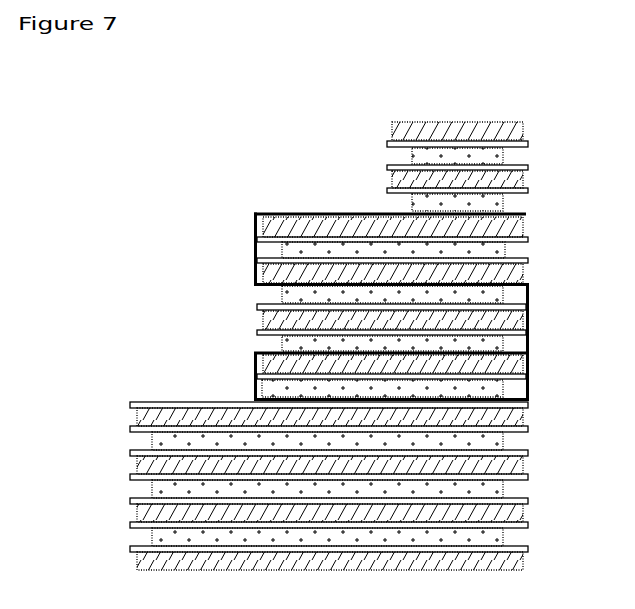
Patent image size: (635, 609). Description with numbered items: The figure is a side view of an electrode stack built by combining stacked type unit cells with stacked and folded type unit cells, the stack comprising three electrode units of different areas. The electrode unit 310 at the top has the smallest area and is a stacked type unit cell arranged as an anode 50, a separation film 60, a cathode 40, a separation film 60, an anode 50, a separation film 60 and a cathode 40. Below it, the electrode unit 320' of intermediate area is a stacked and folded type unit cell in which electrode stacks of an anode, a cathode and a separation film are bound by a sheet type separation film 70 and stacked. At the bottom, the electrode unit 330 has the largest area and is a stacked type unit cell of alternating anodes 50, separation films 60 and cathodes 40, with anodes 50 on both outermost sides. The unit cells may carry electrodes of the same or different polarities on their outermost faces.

The cathode 40 is at (492, 145).
The anode 50 is at (445, 140).
The separation film 60 is at (398, 137).
The sheet type separation film 70 is at (303, 212).
The electrode unit 310 is at (484, 150).
The electrode unit 320' is at (420, 283).
The electrode unit 330 is at (537, 408).